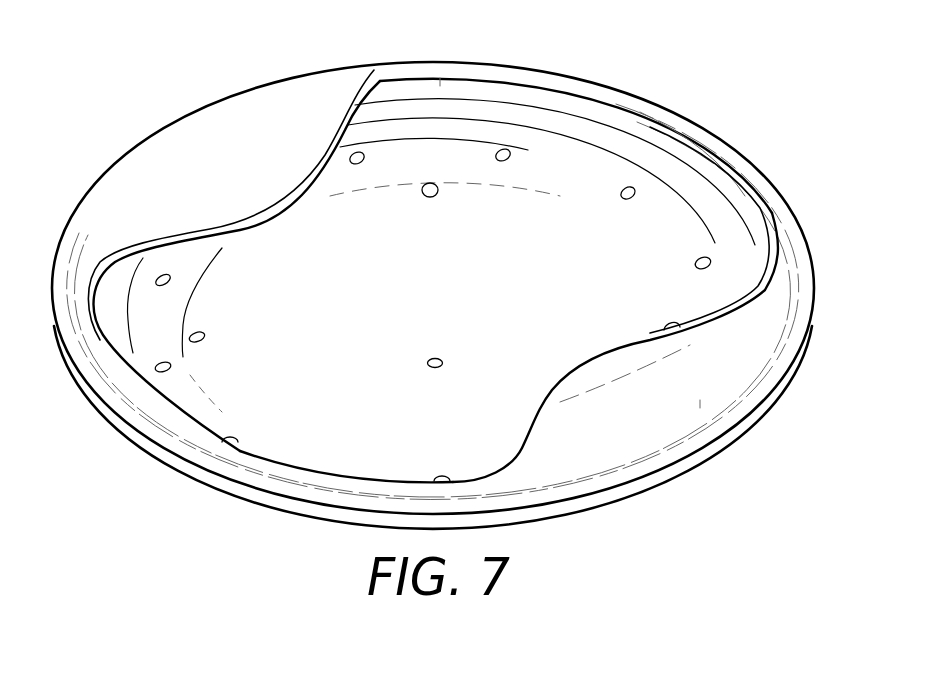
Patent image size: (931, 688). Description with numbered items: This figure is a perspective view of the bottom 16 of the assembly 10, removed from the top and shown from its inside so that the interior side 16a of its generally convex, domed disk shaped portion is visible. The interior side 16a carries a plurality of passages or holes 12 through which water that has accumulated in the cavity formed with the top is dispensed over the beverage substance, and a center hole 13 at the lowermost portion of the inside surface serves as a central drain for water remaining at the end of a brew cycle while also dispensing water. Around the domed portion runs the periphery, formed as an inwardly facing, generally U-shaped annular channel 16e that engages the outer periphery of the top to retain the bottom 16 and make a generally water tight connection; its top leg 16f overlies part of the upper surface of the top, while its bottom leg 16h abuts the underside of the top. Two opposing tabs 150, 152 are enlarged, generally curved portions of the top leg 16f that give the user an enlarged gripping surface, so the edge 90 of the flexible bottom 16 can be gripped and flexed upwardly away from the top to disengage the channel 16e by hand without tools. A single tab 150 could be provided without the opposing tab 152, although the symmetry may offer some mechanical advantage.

The assembly 10 is at (733, 72).
The passages or holes 12 is at (438, 193).
The center hole 13 is at (428, 361).
The bottom 16 is at (94, 130).
The interior side 16a is at (560, 173).
The channel 16e is at (707, 143).
The top leg 16f is at (760, 188).
The bottom leg 16h is at (662, 148).
The edge 90 is at (372, 97).
The tab 150 is at (243, 145).
The tab 152 is at (633, 397).